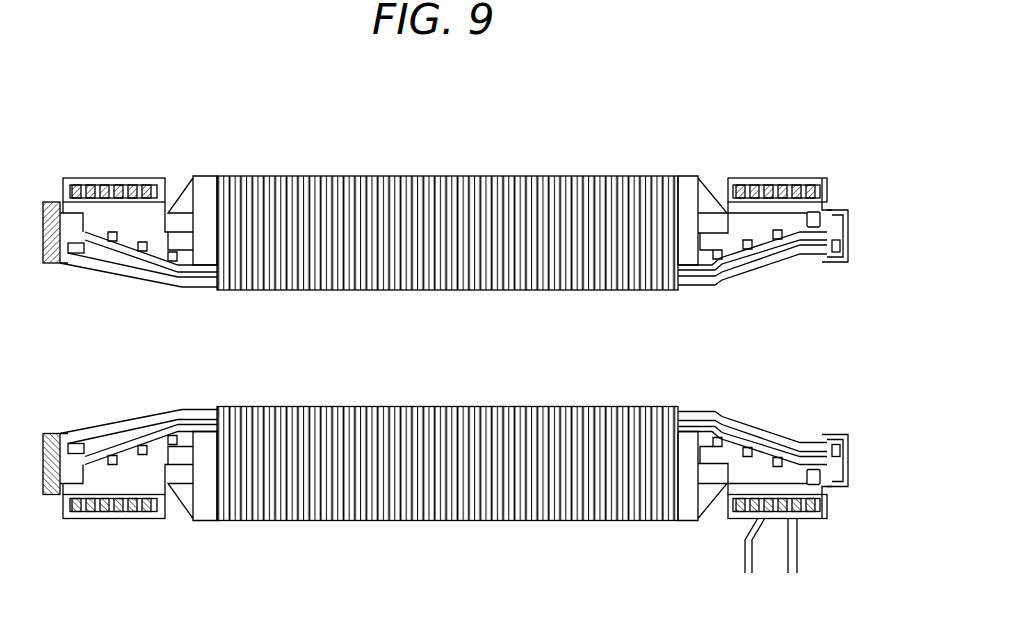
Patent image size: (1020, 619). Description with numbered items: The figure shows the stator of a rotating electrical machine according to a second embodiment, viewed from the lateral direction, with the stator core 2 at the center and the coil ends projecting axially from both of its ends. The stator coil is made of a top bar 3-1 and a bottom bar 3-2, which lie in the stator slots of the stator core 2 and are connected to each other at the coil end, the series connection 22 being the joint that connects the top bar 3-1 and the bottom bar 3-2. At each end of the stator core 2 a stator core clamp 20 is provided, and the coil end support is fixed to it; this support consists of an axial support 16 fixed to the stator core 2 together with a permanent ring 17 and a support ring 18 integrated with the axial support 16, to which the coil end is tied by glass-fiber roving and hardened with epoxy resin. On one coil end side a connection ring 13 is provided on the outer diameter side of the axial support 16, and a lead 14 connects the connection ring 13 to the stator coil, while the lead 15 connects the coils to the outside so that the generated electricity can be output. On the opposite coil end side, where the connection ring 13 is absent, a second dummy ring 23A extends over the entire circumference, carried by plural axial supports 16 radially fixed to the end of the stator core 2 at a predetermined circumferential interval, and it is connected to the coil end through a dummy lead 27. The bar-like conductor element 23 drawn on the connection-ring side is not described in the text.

The stator core 2 is at (430, 190).
The top bar 3-1 is at (797, 262).
The bottom bar 3-2 is at (760, 253).
The connection ring 13 is at (800, 207).
The lead 14 is at (850, 205).
The lead 15 is at (797, 550).
The axial support 16 is at (805, 208).
The permanent ring 17 is at (823, 222).
The support ring 18 is at (718, 268).
The stator core clamp 20 is at (208, 192).
The series connection 22 is at (832, 258).
The bus bar 23 is at (743, 185).
The second dummy ring 23A is at (127, 190).
The dummy lead 27 is at (43, 212).